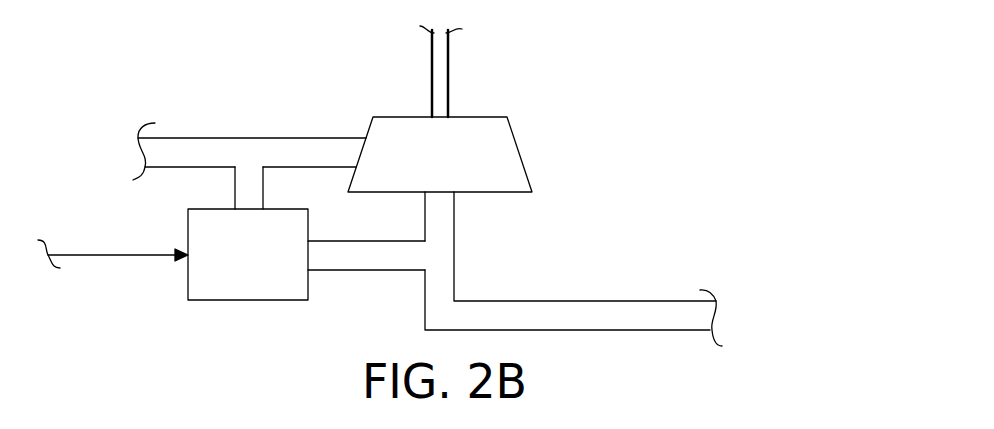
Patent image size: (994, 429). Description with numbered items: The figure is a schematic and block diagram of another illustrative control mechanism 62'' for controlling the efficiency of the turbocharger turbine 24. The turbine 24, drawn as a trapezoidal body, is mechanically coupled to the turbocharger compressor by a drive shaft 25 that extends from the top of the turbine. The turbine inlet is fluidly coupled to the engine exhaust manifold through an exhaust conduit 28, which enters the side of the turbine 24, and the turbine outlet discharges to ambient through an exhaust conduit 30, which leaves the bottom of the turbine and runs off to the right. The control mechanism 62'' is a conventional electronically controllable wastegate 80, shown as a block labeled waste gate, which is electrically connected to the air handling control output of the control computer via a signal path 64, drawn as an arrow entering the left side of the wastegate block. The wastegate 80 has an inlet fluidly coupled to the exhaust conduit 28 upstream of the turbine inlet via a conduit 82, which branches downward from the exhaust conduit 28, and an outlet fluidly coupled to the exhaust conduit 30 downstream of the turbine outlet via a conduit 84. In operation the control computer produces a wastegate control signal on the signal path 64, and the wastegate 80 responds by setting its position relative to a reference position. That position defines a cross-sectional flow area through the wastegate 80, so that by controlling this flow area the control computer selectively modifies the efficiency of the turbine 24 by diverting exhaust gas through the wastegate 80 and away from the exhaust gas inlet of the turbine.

The turbine 24 is at (520, 148).
The drive shaft 25 is at (448, 97).
The exhaust conduit 28 is at (245, 138).
The exhaust conduit 30 is at (573, 300).
The control mechanism 62'' is at (753, 85).
The signal path 64 is at (137, 253).
The wastegate 80 is at (225, 302).
The conduit 82 is at (263, 180).
The conduit 84 is at (338, 272).